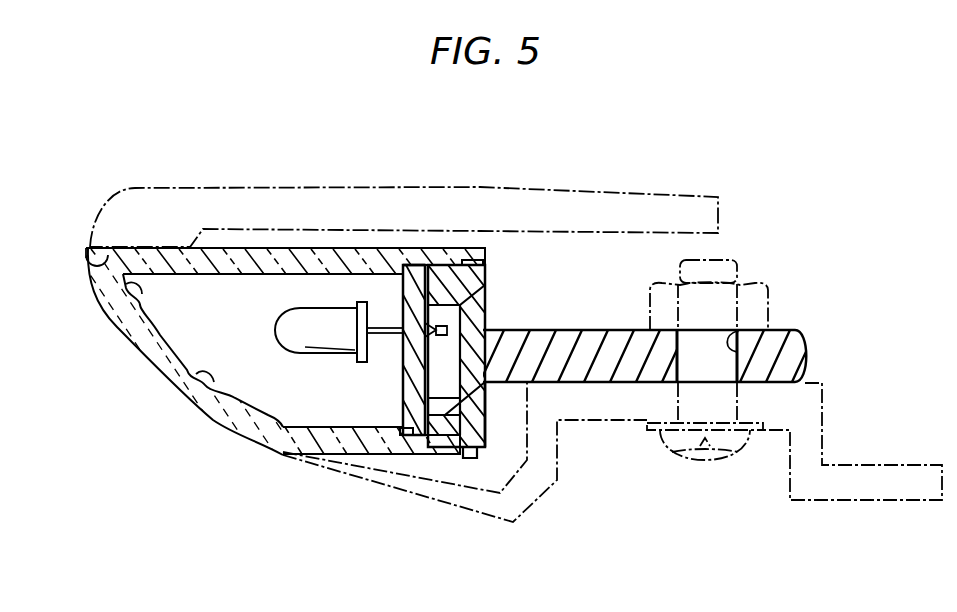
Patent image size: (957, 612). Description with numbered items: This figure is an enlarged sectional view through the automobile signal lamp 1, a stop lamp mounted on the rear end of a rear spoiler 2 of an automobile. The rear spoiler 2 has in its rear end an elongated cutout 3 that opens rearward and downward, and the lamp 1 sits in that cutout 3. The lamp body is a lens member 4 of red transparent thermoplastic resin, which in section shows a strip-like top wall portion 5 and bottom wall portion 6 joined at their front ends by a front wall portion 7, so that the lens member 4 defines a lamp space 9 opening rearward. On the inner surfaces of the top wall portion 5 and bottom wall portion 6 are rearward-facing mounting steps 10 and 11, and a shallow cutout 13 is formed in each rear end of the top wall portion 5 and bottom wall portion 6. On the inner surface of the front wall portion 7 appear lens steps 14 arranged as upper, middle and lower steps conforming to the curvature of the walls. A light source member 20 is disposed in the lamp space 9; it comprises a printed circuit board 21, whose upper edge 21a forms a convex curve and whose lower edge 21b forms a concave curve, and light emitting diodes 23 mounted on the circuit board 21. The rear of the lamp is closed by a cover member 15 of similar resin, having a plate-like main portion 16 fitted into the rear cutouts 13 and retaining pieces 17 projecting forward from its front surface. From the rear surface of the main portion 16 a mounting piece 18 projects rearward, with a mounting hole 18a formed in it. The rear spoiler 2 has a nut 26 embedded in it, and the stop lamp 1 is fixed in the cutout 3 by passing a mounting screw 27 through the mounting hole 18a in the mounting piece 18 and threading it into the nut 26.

The automobile signal lamp 1 is at (93, 149).
The rear spoiler 2 is at (625, 190).
The cutout 3 is at (90, 258).
The lens member 4 is at (211, 422).
The top wall portion 5 is at (266, 251).
The bottom wall portion 6 is at (340, 456).
The front wall portion 7 is at (130, 343).
The lamp space 9 is at (282, 430).
The mounting step 10 is at (400, 292).
The mounting step 11 is at (392, 456).
The shallow cutout 13 is at (474, 260).
The lens step 14 is at (130, 292).
The cover member 15 is at (488, 410).
The main portion 16 is at (488, 300).
The retaining piece 17 is at (465, 286).
The mounting piece 18 is at (590, 330).
The mounting hole 18a is at (740, 329).
The light source member 20 is at (407, 329).
The printed circuit board 21 is at (405, 268).
The upper edge 21a is at (414, 264).
The lower edge 21b is at (416, 440).
The light emitting diode 23 is at (313, 306).
The nut 26 is at (762, 286).
The mounting screw 27 is at (732, 460).